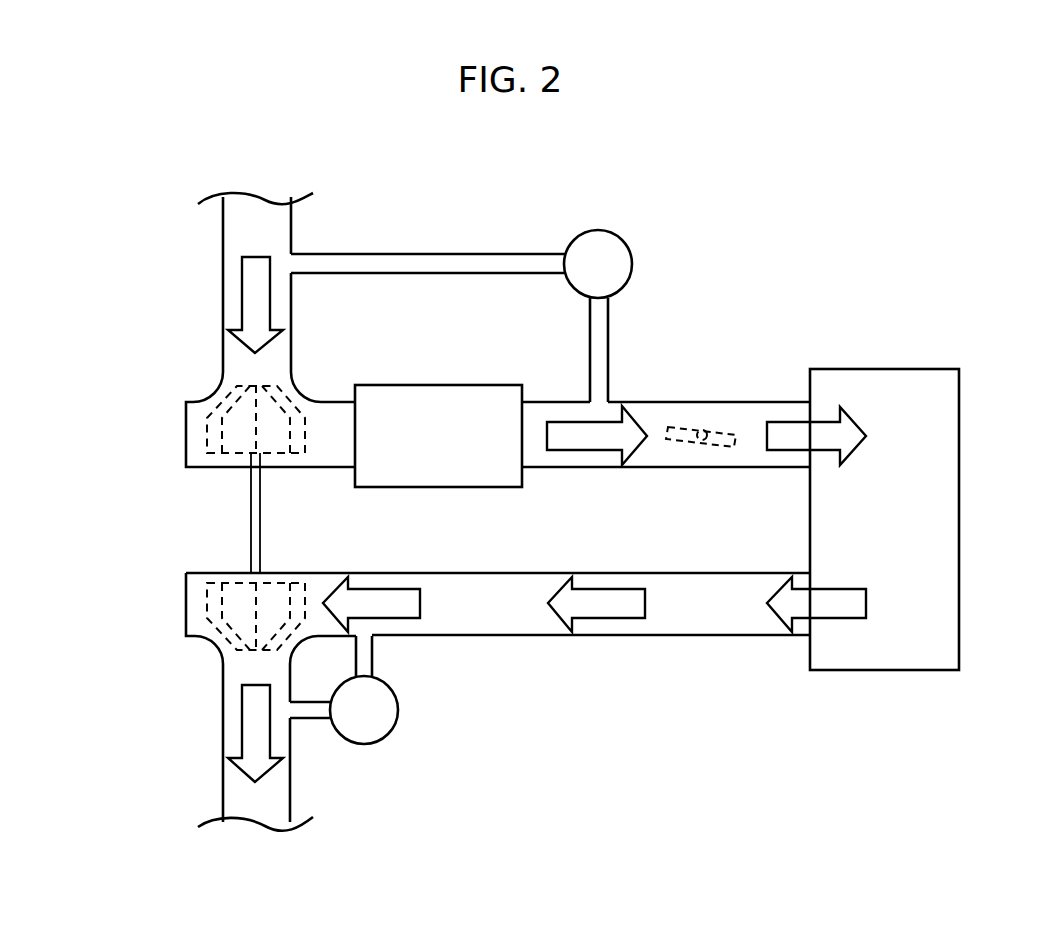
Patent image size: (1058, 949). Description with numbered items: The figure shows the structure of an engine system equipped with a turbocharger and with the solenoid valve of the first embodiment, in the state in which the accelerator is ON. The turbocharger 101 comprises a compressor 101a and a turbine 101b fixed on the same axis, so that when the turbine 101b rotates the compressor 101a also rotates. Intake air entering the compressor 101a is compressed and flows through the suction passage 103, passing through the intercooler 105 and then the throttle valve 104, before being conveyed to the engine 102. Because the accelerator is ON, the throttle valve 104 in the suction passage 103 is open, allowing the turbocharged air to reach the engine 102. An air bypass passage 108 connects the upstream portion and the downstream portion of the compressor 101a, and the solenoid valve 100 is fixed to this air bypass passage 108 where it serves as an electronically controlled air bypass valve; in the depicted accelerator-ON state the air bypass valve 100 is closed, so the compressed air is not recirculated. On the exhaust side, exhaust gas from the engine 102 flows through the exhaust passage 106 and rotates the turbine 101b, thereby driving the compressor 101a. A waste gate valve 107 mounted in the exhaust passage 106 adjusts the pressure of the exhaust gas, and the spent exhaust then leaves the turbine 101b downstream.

The solenoid valve 100 is at (598, 230).
The turbocharger 101 is at (112, 408).
The compressor 101a is at (197, 437).
The turbine 101b is at (197, 601).
The engine 102 is at (889, 369).
The suction passage 103 is at (565, 468).
The throttle valve 104 is at (703, 447).
The intercooler 105 is at (452, 385).
The exhaust passage 106 is at (598, 636).
The waste gate valve 107 is at (398, 713).
The air bypass passage 108 is at (425, 254).